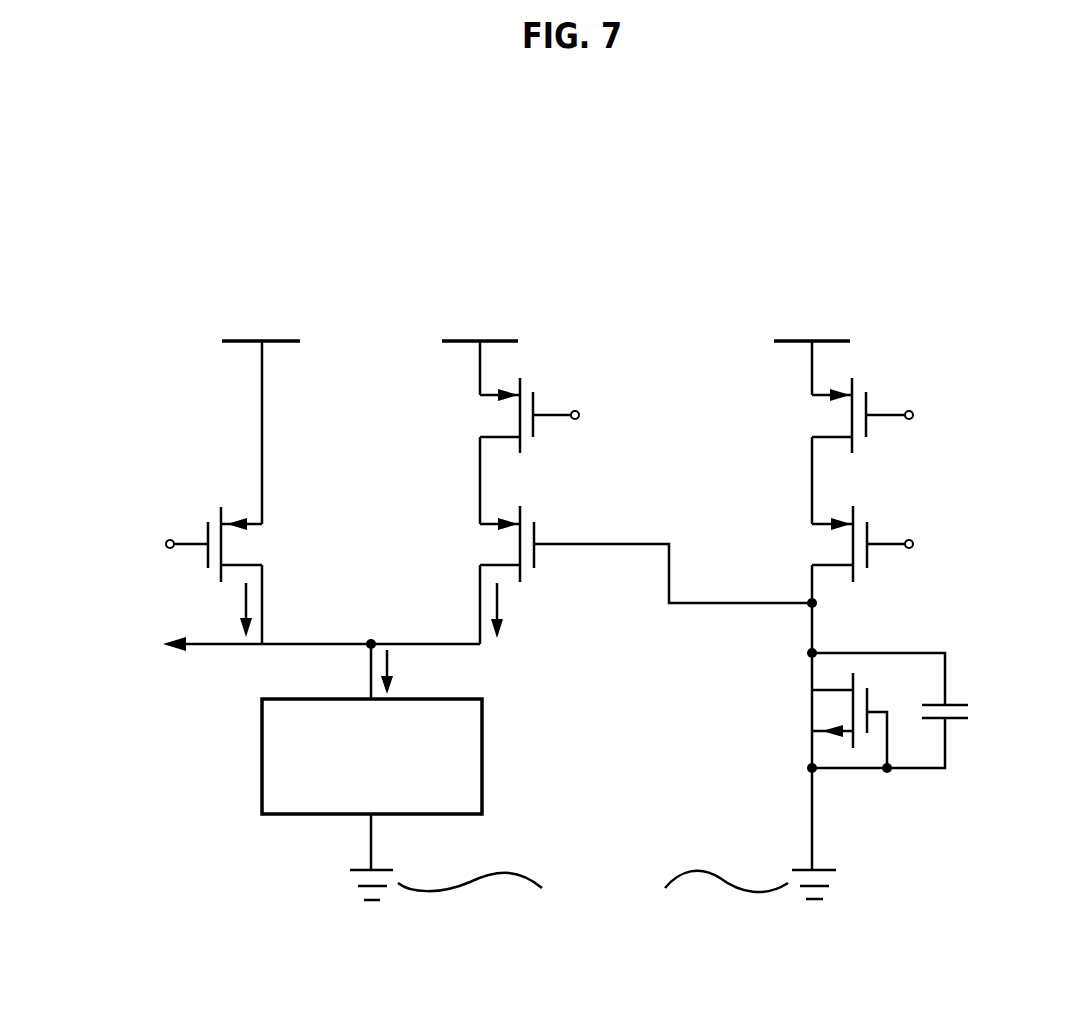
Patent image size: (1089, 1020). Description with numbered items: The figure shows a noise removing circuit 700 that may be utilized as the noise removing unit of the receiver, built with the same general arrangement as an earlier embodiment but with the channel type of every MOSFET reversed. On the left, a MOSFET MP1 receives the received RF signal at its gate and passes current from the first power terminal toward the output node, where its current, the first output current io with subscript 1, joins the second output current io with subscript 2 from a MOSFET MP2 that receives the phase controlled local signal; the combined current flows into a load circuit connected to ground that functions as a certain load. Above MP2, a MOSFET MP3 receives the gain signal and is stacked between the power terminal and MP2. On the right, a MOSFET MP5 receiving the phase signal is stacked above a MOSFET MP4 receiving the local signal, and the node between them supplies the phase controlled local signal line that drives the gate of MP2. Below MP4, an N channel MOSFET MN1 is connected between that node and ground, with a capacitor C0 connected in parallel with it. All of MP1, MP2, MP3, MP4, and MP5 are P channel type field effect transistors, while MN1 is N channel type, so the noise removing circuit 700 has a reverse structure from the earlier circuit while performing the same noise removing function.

The noise removing circuit 700 is at (884, 186).
The MOSFET MP1 is at (253, 492).
The MOSFET MP2 is at (607, 575).
The MOSFET MP3 is at (491, 432).
The MOSFET MP4 is at (828, 554).
The MOSFET MP5 is at (828, 432).
The N channel MOSFET MN1 is at (817, 710).
The capacitor C0 is at (914, 710).
The current io1 1 is at (223, 610).
The current io2 2 is at (523, 610).